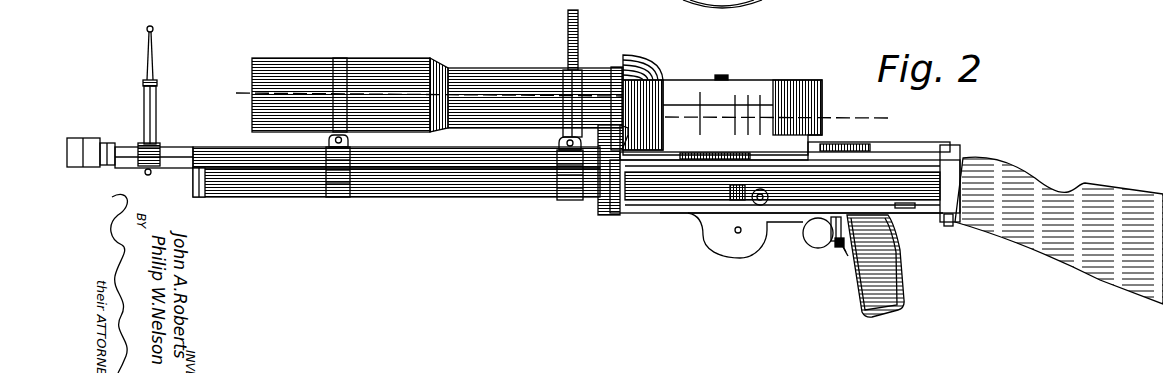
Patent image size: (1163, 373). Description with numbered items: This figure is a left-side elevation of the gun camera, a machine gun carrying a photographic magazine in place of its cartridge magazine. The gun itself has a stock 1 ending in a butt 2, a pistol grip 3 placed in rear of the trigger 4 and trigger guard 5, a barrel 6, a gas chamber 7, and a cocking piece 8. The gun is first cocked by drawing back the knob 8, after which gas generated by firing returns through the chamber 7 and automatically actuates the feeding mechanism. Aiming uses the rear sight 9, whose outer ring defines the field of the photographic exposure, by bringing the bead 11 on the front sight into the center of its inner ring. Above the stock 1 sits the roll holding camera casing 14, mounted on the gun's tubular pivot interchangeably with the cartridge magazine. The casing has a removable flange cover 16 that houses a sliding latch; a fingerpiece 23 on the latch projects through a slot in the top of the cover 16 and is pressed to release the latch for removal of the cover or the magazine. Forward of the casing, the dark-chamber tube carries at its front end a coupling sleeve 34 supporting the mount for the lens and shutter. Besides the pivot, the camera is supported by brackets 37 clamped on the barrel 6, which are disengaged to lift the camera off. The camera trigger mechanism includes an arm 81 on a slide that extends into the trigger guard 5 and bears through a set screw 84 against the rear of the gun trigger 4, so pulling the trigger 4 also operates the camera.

The stock 1 is at (898, 175).
The butt 2 is at (1059, 230).
The pistol grip 3 is at (885, 281).
The trigger 4 is at (820, 243).
The trigger guard 5 is at (250, 92).
The barrel 6 is at (465, 158).
The gas chamber 7 is at (507, 198).
The cocking piece 8 is at (758, 201).
The rear sight 9 is at (578, 32).
The bead 11 is at (153, 28).
The camera casing 14 is at (722, 105).
The flange cover 16 is at (812, 82).
The fingerpiece 23 is at (729, 77).
The coupling sleeve 34 is at (446, 75).
The brackets 37 is at (350, 152).
The arm 81 is at (831, 247).
The set screw 84 is at (838, 253).